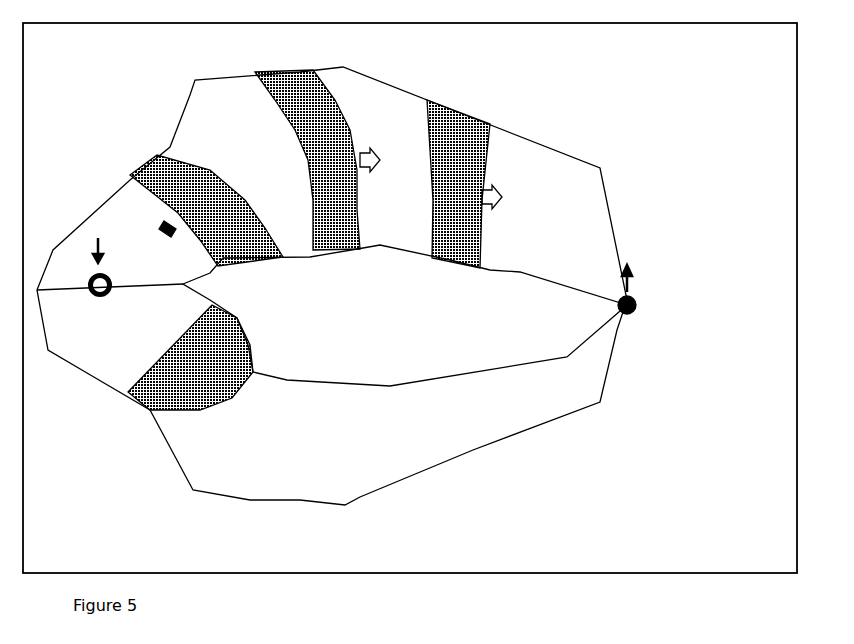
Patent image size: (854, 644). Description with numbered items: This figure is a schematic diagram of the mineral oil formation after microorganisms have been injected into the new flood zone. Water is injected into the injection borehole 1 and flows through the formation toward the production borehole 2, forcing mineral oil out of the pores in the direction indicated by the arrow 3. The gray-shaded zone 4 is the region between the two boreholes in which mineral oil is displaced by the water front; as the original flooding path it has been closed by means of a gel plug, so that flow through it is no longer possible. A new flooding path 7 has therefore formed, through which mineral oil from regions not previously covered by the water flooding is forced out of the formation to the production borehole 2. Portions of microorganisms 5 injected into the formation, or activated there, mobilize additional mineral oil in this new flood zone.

The injection borehole 1 is at (97, 297).
The production borehole 2 is at (635, 313).
The arrow 3 is at (380, 160).
The zone 4 is at (413, 437).
The portions of microorganisms 5 is at (283, 258).
The new flooding path 7 is at (145, 412).